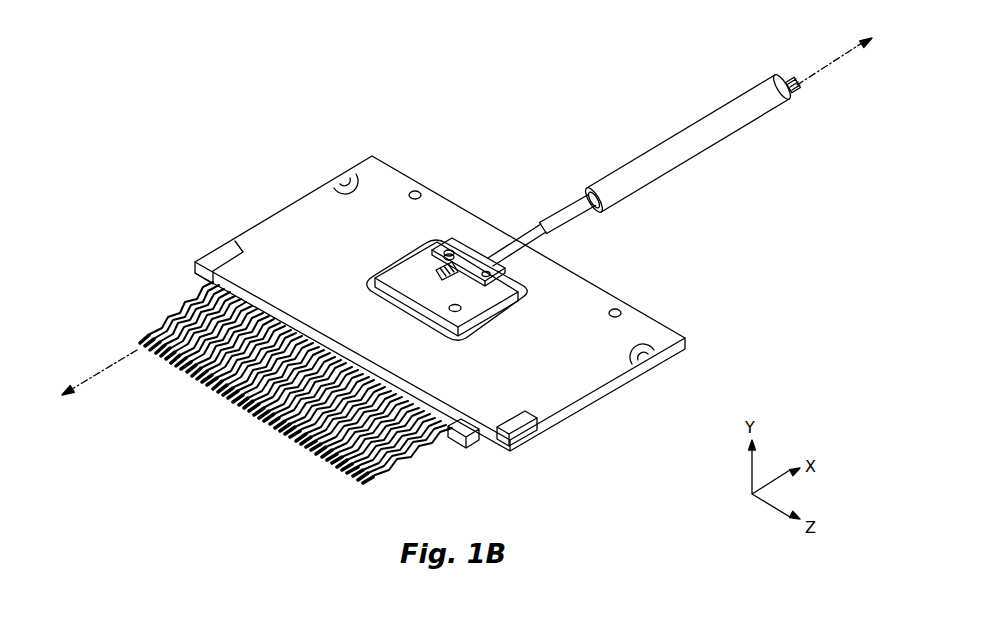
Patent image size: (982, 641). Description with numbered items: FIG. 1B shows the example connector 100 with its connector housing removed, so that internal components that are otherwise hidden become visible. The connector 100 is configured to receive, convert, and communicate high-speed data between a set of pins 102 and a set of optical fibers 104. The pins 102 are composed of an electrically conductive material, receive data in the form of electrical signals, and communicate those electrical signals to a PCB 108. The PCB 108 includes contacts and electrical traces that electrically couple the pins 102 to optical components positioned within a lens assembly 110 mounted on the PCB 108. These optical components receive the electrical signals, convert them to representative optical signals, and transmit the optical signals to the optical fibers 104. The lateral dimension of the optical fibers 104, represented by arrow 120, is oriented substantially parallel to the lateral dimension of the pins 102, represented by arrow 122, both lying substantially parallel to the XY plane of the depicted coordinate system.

The connector 100 is at (133, 86).
The pins 102 is at (300, 452).
The optical fibers 104 is at (803, 94).
The PCB 108 is at (351, 254).
The lens assembly 110 is at (468, 302).
The arrow 120 is at (833, 62).
The arrow 122 is at (122, 358).